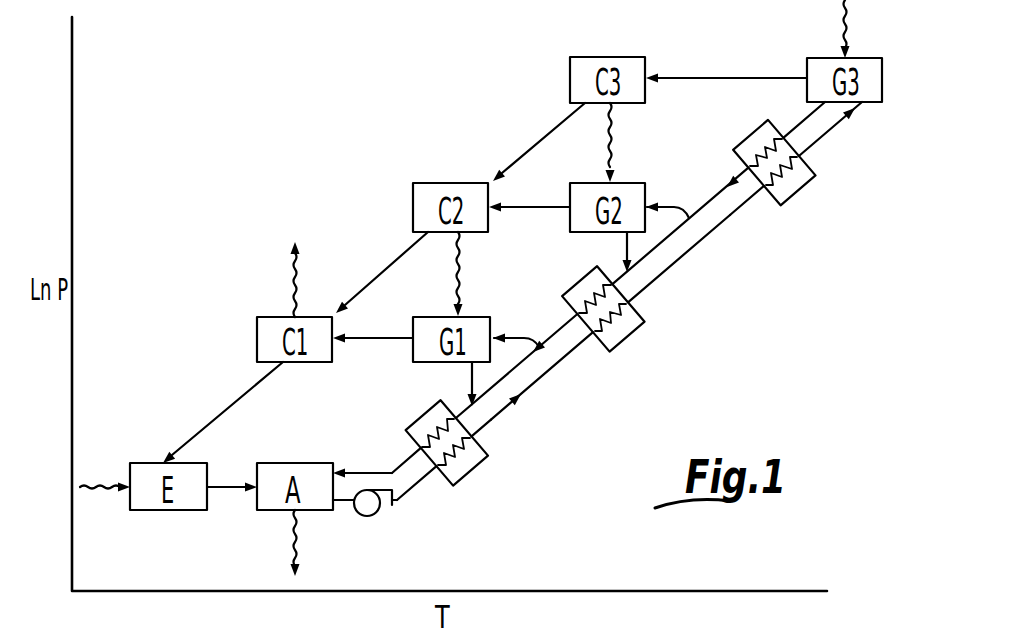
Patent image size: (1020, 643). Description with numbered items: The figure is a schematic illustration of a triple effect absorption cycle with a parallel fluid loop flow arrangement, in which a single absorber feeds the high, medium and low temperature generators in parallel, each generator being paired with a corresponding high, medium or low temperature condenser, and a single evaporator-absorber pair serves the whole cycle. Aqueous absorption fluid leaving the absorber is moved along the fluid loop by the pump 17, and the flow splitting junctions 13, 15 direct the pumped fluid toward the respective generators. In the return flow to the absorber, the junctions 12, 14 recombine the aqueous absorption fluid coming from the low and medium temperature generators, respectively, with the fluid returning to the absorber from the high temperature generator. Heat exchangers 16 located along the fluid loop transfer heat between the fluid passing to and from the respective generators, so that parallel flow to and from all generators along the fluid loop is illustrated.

The junction 12 is at (468, 403).
The flow splitting junction 13 is at (553, 369).
The junction 14 is at (624, 270).
The flow splitting junction 15 is at (704, 239).
The heat exchanger 16 is at (800, 190).
The pump 17 is at (372, 510).